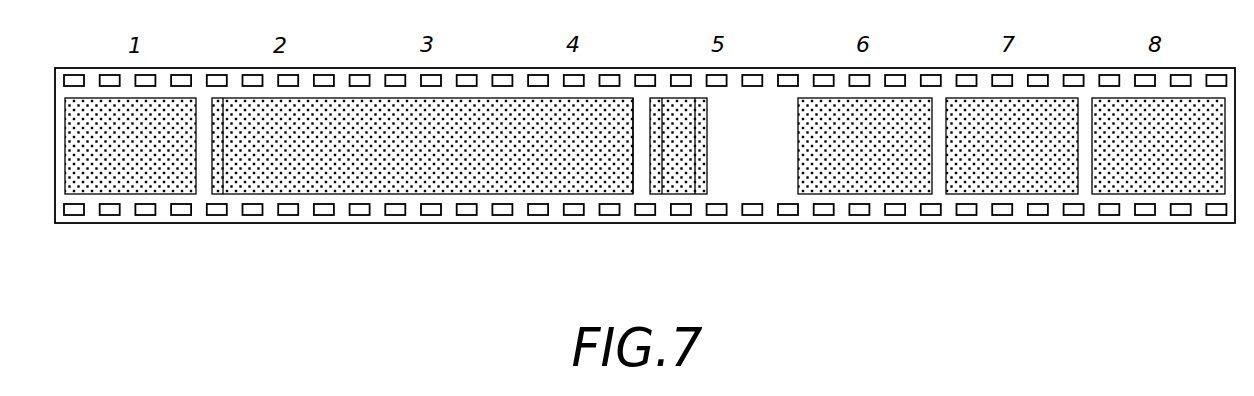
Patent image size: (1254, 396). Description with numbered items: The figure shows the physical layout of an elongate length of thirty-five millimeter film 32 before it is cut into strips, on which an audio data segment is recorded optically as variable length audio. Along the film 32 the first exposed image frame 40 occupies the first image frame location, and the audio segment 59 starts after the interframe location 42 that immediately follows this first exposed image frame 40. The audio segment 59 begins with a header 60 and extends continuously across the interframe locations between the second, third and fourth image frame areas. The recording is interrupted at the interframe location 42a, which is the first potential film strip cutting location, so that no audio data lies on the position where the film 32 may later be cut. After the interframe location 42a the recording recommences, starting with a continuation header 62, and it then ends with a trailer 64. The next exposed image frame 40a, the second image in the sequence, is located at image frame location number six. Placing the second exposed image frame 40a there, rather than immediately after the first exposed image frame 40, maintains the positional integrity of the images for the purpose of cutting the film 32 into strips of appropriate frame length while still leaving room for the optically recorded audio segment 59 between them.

The film 32 is at (322, 68).
The first exposed image frame 40 is at (123, 183).
The next exposed image frame 40a is at (872, 194).
The interframe location 42 is at (203, 190).
The interframe location 42a is at (640, 177).
The audio segment 59 is at (339, 191).
The header 60 is at (217, 100).
The continuation header 62 is at (652, 182).
The trailer 64 is at (705, 171).